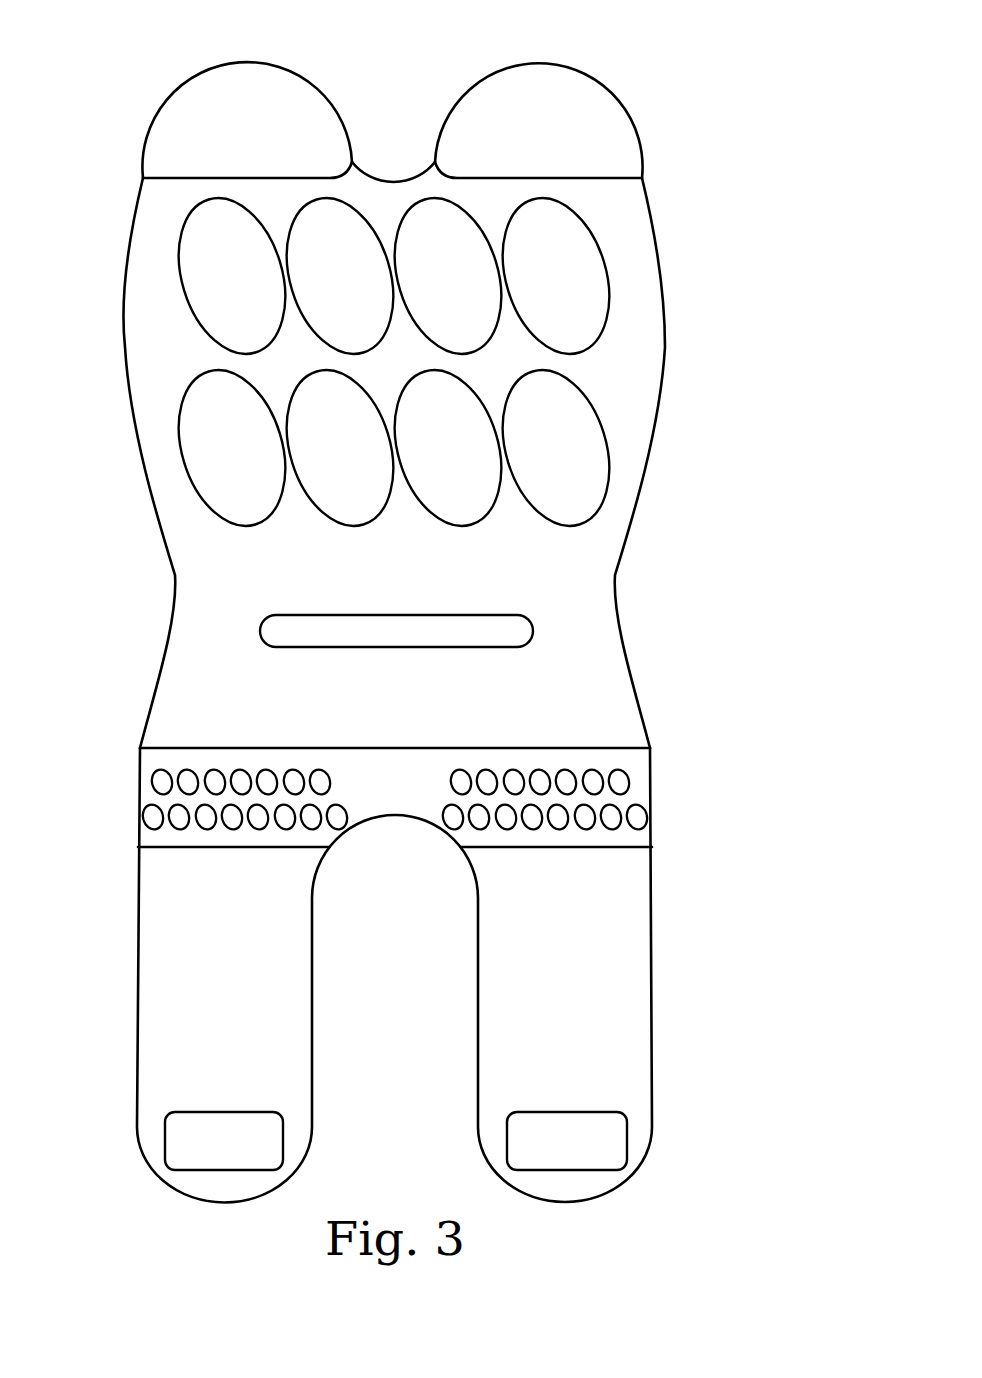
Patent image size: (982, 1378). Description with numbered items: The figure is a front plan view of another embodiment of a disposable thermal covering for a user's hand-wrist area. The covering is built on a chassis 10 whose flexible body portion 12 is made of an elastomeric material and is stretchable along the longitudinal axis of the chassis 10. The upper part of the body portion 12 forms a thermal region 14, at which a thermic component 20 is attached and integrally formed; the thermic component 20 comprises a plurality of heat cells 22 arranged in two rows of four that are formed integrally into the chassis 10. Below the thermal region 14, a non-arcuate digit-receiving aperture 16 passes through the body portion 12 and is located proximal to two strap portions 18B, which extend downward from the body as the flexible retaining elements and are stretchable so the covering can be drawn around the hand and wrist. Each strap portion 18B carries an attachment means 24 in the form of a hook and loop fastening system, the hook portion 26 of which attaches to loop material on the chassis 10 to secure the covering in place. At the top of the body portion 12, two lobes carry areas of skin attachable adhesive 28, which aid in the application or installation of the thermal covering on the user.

The chassis 10 is at (441, 612).
The flexible body portion 12 is at (358, 380).
The thermal region 14 is at (147, 253).
The digit-receiving aperture 16 is at (502, 636).
The strap portions 18B is at (180, 972).
The thermic component 20 is at (457, 316).
The heat cells 22 is at (545, 225).
The attachment means 24 is at (162, 1148).
The hook portion 26 is at (395, 1154).
The skin attachable adhesive 28 is at (190, 127).